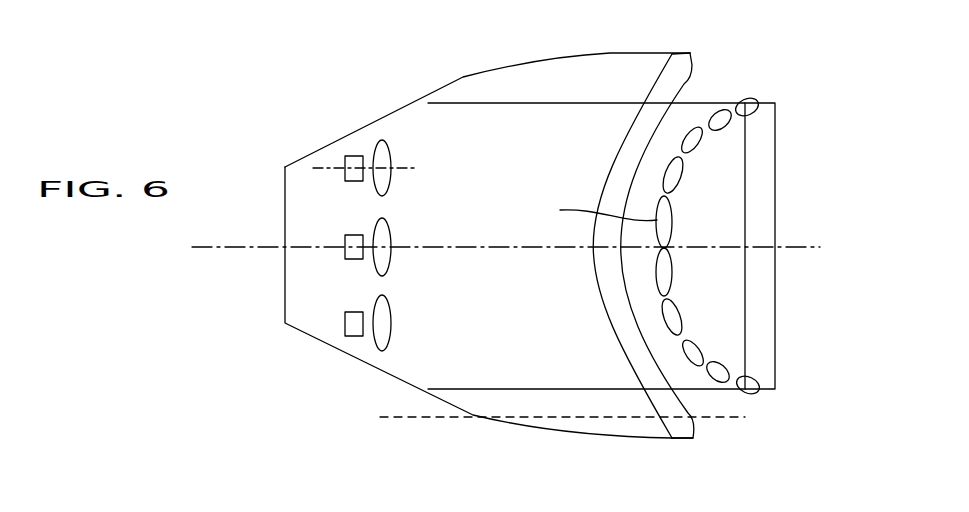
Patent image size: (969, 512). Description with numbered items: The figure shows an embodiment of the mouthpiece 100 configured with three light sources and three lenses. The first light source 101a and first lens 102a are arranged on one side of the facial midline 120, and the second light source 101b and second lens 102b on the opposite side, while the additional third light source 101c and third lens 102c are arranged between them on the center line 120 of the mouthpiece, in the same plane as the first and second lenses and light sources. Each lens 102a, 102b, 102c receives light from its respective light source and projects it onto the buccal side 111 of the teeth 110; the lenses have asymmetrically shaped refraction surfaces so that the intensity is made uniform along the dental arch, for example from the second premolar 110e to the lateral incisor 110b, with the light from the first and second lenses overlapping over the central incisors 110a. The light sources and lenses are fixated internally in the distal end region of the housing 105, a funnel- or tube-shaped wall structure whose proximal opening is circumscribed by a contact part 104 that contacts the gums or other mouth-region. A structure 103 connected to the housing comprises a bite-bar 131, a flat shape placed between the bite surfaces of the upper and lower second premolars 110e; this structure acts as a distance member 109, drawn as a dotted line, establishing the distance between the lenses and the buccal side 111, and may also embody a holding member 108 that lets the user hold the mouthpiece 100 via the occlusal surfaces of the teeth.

The mouthpiece 100 is at (290, 102).
The first light source 101a is at (354, 155).
The second light source 101b is at (355, 337).
The third light source 101c is at (345, 243).
The first lens 102a is at (388, 146).
The second lens 102b is at (389, 343).
The third lens 102c is at (387, 270).
The structure 103 is at (707, 100).
The contact part 104 is at (684, 430).
The housing 105 is at (499, 80).
The holding member 108 is at (681, 53).
The distance member 109 is at (412, 420).
The teeth 110 is at (673, 205).
The central incisors 110a is at (672, 227).
The lateral incisor 110b is at (680, 167).
The second premolar 110e is at (750, 99).
The buccal side 111 is at (587, 210).
The facial midline 120 is at (230, 250).
The bite-bar 131 is at (777, 335).